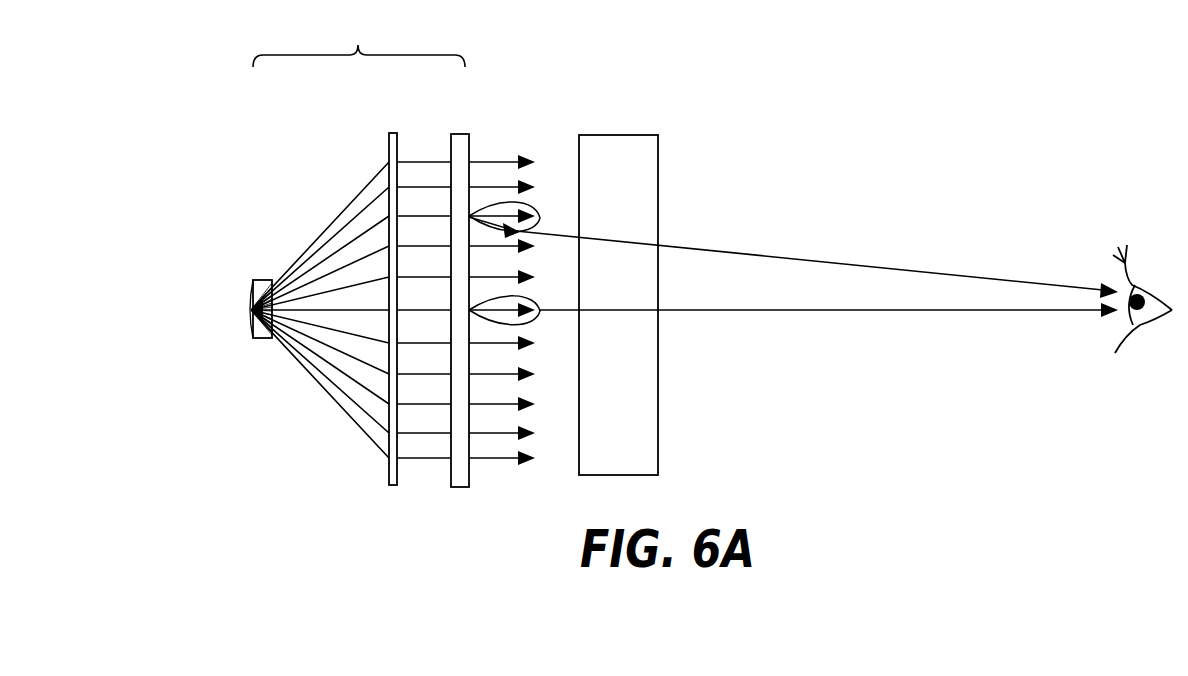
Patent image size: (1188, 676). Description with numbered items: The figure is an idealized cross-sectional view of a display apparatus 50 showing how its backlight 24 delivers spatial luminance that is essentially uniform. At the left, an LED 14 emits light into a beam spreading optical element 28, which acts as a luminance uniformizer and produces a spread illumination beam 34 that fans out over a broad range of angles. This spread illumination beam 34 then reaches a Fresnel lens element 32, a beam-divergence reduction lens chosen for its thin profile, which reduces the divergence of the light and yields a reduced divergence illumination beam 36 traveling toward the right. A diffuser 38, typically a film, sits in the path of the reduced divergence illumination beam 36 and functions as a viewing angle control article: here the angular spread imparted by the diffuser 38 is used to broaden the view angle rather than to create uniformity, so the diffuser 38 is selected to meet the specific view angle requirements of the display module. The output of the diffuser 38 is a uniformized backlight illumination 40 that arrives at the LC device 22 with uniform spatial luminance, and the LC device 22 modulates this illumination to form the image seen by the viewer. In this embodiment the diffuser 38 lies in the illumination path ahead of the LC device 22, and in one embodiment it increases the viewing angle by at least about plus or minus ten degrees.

The LED 14 is at (252, 311).
The LC device 22 is at (627, 135).
The backlight 24 is at (359, 42).
The beam-spreading optical element 28 is at (224, 339).
The Fresnel lens element 32 is at (393, 486).
The spread illumination beam 34 is at (317, 238).
The reduced divergence illumination beam 36 is at (381, 309).
The diffuser 38 is at (463, 487).
The uniformized backlight illumination 40 is at (494, 160).
The display apparatus 50 is at (797, 132).